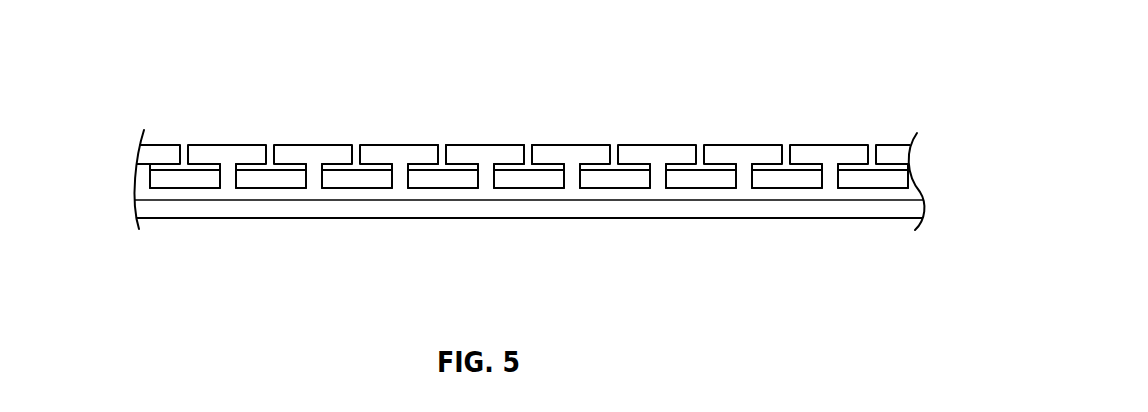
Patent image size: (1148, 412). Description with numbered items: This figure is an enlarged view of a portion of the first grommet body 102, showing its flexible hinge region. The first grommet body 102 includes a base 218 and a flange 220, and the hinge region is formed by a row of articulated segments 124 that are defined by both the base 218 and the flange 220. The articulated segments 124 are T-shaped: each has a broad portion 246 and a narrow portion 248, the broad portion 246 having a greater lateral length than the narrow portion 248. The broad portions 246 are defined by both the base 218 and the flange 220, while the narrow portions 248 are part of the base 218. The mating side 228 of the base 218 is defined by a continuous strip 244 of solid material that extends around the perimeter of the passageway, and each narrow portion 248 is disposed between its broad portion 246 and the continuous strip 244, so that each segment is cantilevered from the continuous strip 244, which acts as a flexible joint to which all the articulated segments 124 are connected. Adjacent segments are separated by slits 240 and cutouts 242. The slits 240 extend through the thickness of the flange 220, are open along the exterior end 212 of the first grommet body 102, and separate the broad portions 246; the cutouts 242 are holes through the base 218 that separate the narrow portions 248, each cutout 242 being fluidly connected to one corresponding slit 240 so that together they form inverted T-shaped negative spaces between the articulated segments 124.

The first grommet body 102 is at (242, 53).
The articulated segments 124 is at (398, 157).
The exterior end 212 is at (704, 121).
The flange 220 is at (127, 148).
The base 218 is at (127, 165).
The slits 240 is at (441, 139).
The cutouts 242 is at (542, 162).
The continuous strip 244 is at (358, 207).
The broad portion 246 is at (375, 157).
The narrow portion 248 is at (400, 182).
The mating side 228 is at (267, 218).